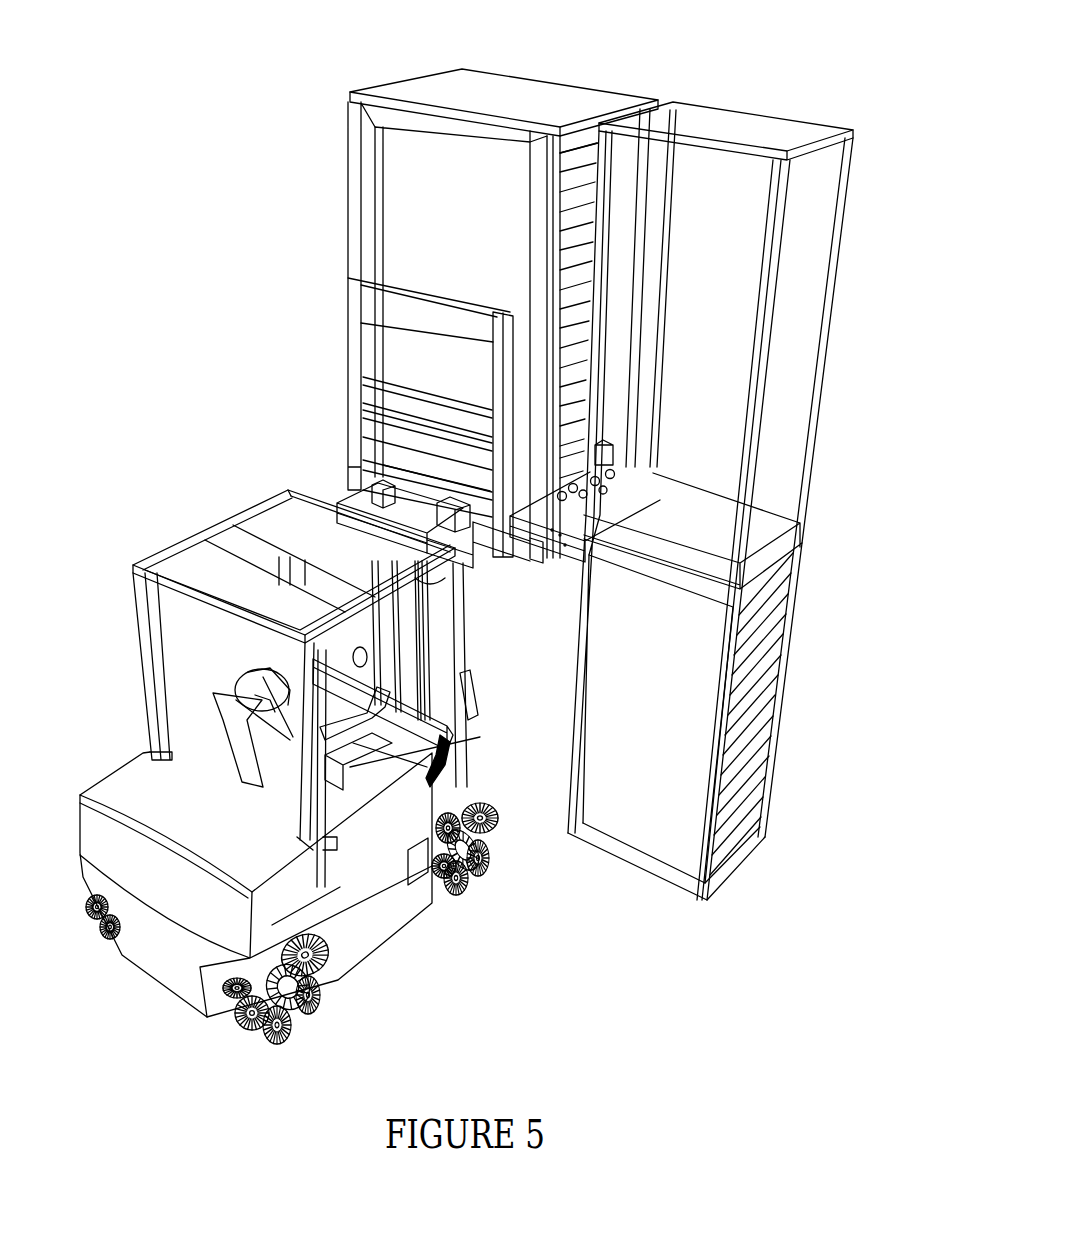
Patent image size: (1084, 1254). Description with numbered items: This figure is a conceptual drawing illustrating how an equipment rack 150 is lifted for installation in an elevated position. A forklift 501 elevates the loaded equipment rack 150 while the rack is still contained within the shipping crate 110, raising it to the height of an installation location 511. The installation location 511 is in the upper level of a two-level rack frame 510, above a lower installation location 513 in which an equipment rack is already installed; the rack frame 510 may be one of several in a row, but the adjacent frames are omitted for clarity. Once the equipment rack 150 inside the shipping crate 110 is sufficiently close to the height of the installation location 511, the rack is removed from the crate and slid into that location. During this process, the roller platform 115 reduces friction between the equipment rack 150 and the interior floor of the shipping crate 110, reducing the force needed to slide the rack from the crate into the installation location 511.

The shipping crate 110 is at (563, 76).
The equipment rack 150 is at (568, 223).
The roller platform 115 is at (548, 499).
The rack frame 510 is at (800, 92).
The installation location 511 is at (800, 313).
The installation location 513 is at (767, 687).
The forklift 501 is at (167, 523).